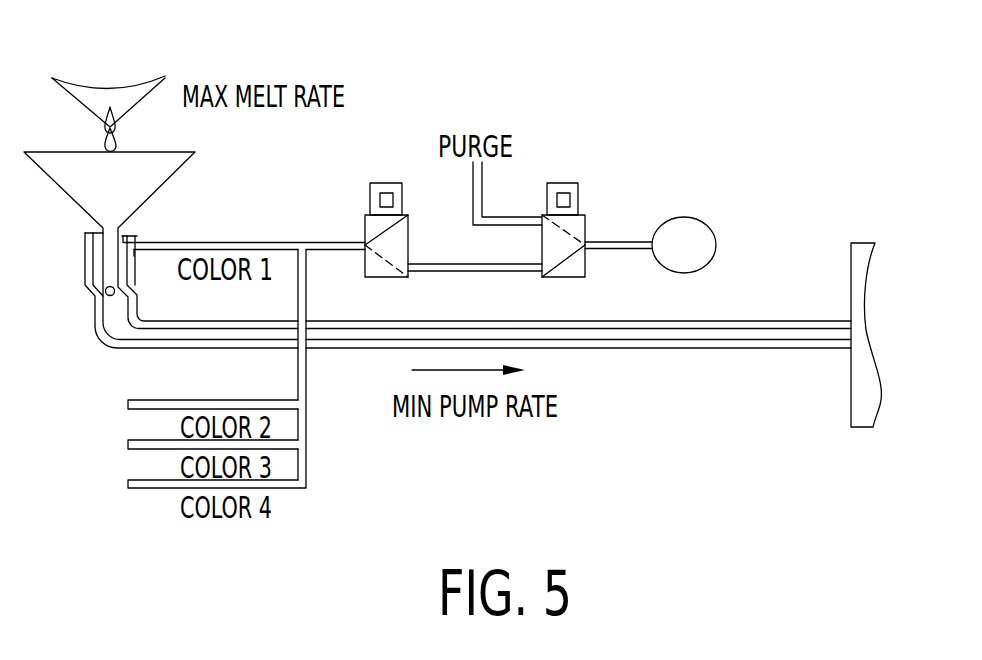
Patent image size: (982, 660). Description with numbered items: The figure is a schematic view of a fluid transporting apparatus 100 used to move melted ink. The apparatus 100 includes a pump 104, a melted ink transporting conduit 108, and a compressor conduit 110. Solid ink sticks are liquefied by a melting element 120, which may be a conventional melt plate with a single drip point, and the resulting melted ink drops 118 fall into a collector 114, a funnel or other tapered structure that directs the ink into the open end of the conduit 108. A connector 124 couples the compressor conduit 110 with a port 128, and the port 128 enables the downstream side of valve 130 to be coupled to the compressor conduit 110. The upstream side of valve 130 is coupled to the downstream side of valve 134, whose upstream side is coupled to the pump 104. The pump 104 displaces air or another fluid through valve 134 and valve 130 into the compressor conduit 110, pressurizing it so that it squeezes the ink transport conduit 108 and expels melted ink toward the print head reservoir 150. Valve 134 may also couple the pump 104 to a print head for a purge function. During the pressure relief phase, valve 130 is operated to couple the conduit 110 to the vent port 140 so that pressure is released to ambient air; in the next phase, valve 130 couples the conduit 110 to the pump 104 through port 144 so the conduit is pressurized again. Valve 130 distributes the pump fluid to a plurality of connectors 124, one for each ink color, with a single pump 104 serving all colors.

The fluid transporting apparatus 100 is at (703, 180).
The pump 104 is at (717, 246).
The melted ink transporting conduit 108 is at (629, 337).
The compressor conduit 110 is at (583, 320).
The collector 114 is at (162, 182).
The melted material drops 118 is at (134, 106).
The melting element 120 is at (116, 82).
The connector 124 is at (136, 233).
The port 128 is at (139, 254).
The valve 130 is at (386, 278).
The valve 134 is at (588, 228).
The vent port 140 is at (414, 195).
The port 144 is at (410, 259).
The print head reservoir 150 is at (851, 256).